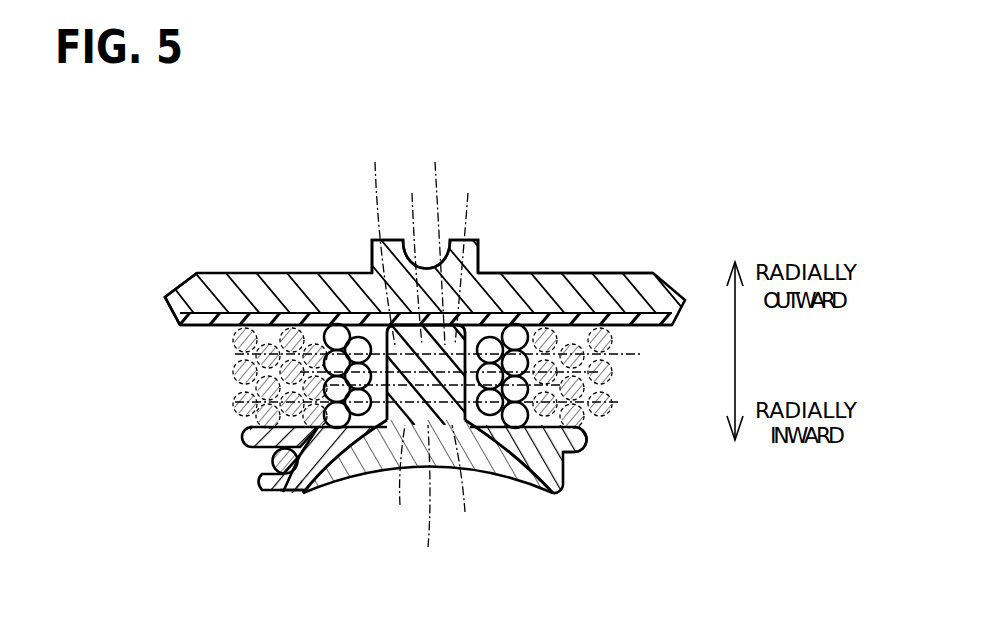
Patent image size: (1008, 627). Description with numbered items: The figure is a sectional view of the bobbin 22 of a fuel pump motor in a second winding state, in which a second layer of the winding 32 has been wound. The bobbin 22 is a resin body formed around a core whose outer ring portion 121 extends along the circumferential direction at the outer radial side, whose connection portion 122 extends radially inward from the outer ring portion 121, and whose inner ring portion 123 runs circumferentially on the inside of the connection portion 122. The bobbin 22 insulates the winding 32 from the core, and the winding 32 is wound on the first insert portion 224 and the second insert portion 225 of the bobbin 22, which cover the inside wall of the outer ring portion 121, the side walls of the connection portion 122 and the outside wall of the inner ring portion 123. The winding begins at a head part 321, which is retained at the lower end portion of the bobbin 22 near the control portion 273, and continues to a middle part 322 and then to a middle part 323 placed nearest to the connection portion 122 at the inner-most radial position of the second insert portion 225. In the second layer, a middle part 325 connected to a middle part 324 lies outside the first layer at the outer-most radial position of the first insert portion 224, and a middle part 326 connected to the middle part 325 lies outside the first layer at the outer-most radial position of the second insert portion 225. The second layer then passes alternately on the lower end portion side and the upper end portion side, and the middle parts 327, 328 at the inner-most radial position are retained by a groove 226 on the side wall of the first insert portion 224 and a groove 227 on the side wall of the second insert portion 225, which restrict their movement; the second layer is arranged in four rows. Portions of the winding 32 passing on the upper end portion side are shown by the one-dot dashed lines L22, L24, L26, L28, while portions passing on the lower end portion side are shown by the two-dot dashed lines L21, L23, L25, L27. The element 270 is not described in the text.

The outer ring portion 121 is at (618, 290).
The bobbin 22 is at (235, 298).
The second insert portion 225 is at (189, 280).
The first insert portion 224 is at (587, 285).
The winding 32 is at (256, 318).
The inner ring portion 123 is at (548, 492).
The middle part 322 is at (527, 488).
The middle part 327 is at (566, 452).
The middle part 323 is at (353, 475).
The control portion 273 is at (248, 437).
The O-ring 270 is at (273, 456).
The head part 321 is at (278, 486).
The middle part 328 is at (315, 482).
The middle part 326 is at (325, 330).
The middle part 324 is at (348, 336).
The middle part 325 is at (525, 330).
The connection portion 122 is at (245, 386).
The groove 227 is at (246, 410).
The groove 226 is at (605, 410).
The two-dot dashed line L21 is at (412, 256).
The one-dot dashed line L22 is at (376, 241).
The two-dot dashed line L23 is at (439, 241).
The one-dot dashed line L24 is at (473, 256).
The two-dot dashed line L25 is at (456, 372).
The one-dot dashed line L26 is at (396, 479).
The two-dot dashed line L27 is at (425, 499).
The one-dot dashed line L28 is at (463, 481).